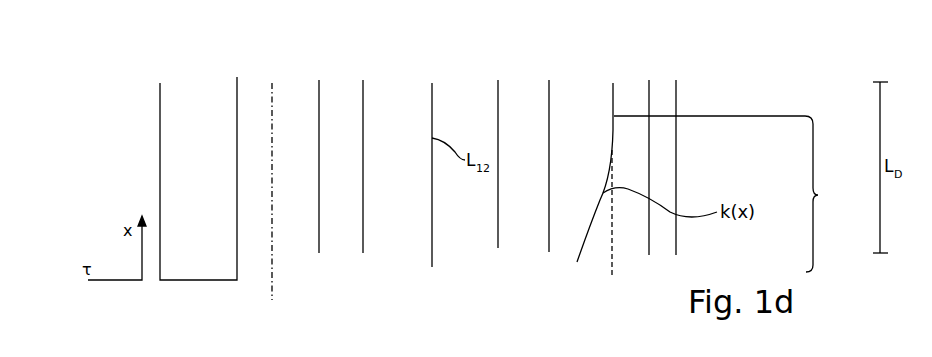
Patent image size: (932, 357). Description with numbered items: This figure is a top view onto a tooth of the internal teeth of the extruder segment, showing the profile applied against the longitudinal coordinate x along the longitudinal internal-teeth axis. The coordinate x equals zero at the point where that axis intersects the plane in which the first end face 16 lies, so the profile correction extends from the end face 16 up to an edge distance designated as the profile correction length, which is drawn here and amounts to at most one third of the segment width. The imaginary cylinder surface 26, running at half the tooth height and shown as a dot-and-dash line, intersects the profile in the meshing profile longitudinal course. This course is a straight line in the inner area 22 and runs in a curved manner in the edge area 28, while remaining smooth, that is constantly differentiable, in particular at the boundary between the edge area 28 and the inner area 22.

The first end face 16 is at (190, 283).
The inner area 22 is at (681, 82).
The imaginary cylinder surface 26 is at (612, 248).
The edge area 28 is at (829, 194).